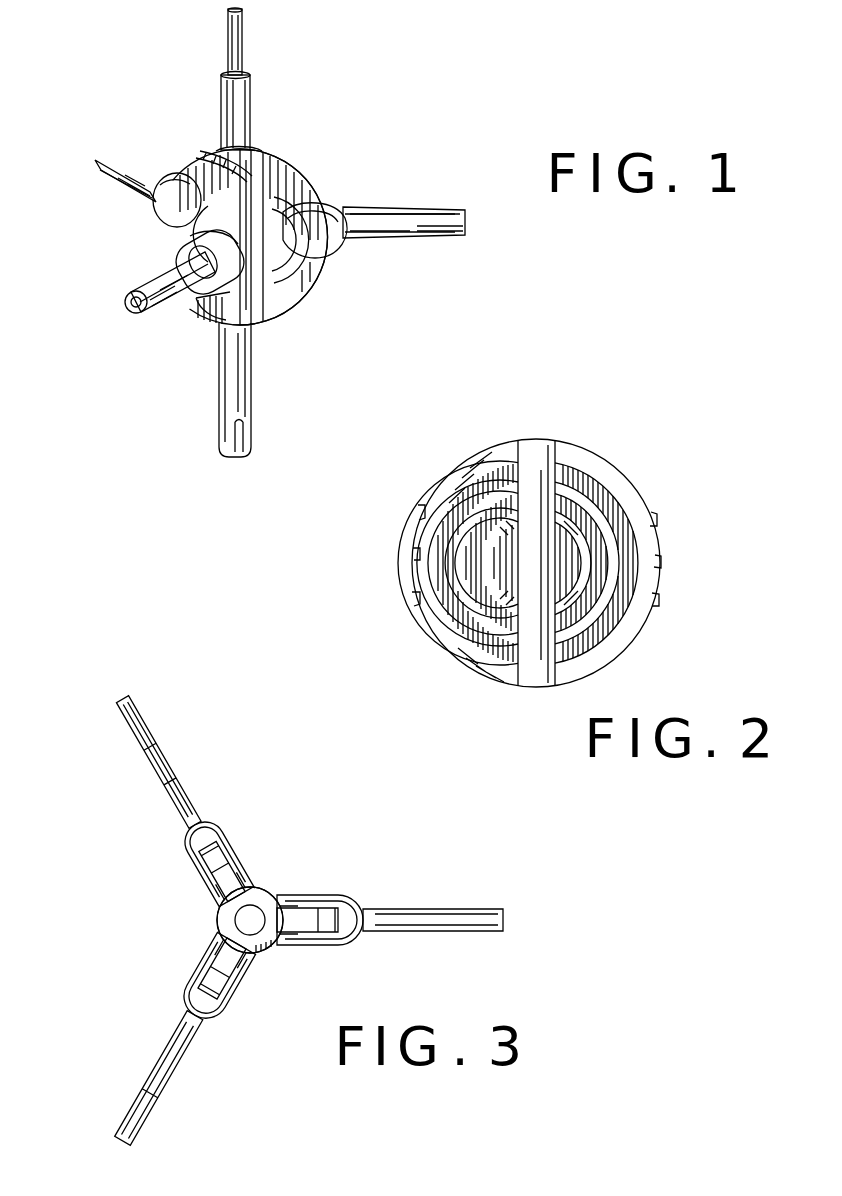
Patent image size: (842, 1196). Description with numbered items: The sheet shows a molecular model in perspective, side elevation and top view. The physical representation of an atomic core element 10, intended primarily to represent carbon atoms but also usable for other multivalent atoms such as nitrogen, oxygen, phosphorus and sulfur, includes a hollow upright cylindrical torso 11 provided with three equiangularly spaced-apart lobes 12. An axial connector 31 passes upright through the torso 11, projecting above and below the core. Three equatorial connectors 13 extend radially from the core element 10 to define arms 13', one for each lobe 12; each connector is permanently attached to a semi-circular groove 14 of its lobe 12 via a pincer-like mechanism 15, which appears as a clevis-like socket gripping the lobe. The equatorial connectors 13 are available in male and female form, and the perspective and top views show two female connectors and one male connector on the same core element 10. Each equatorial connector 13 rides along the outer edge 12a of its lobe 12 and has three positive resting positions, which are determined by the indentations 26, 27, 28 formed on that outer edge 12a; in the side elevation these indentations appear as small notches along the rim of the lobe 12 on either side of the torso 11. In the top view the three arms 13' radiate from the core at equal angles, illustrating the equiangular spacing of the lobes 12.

In FIG. 1, the atomic core element 10 is at (307, 152).
In FIG. 1, the hollow upright cylindrical torso 11 is at (255, 151).
In FIG. 2, the hollow upright cylindrical torso 11 is at (520, 441).
In FIG. 3, the hollow upright cylindrical torso 11 is at (276, 888).
In FIG. 1, the lobe 12 is at (195, 160).
In FIG. 2, the lobe 12 is at (475, 462).
In FIG. 3, the lobe 12 is at (248, 886).
In FIG. 1, the outer edge of the lobe 12a is at (212, 330).
In FIG. 1, the equatorial connector 13 is at (280, 214).
In FIG. 3, the equatorial connector 13 is at (308, 920).
In FIG. 1, the arm 13' is at (269, 207).
In FIG. 1, the semi-circular groove 14 is at (302, 275).
In FIG. 2, the semi-circular groove 14 is at (575, 512).
In FIG. 1, the pincer-like mechanism 15 is at (140, 214).
In FIG. 2, the indentation 26 is at (417, 512).
In FIG. 2, the indentation 27 is at (413, 558).
In FIG. 2, the indentation 28 is at (412, 603).
In FIG. 1, the axial connector 31 is at (260, 84).
In FIG. 3, the axial connector 31 is at (262, 950).